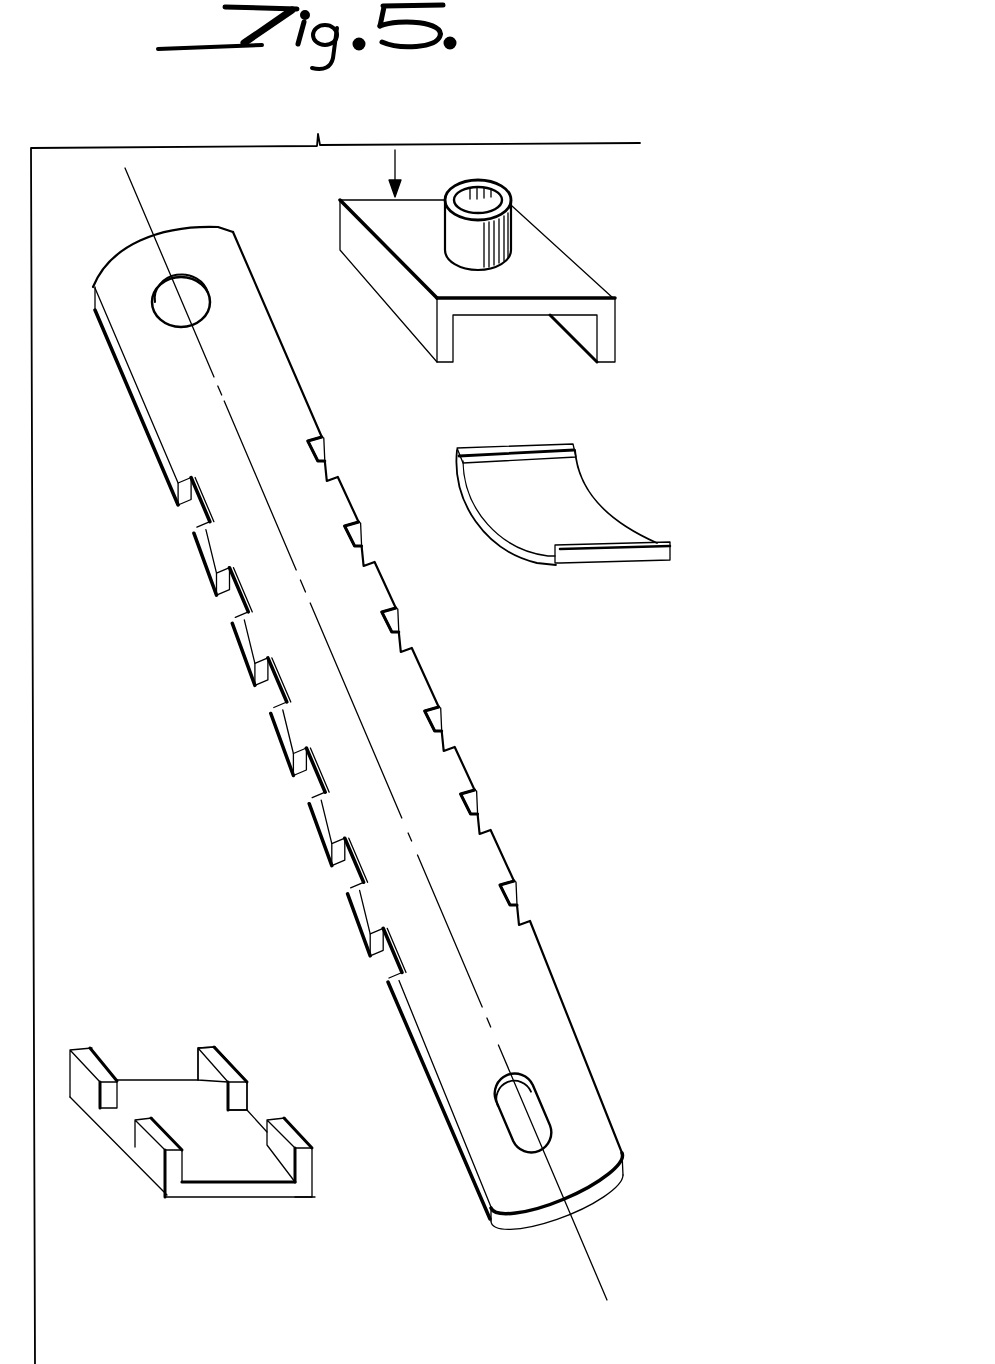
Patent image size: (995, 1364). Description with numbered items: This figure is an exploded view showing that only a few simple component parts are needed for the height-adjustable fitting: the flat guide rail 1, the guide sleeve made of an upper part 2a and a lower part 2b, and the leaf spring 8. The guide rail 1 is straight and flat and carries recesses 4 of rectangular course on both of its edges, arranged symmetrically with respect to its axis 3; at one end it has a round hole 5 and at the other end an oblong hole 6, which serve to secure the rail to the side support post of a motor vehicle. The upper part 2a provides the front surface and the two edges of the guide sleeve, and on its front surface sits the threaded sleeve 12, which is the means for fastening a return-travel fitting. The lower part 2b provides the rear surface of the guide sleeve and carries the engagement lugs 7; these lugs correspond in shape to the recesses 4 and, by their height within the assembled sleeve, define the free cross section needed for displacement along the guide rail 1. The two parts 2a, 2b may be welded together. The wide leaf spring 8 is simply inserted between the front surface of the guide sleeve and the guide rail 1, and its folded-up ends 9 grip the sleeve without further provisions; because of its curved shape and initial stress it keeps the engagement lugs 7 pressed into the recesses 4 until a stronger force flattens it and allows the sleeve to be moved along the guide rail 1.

The guide rail 1 is at (172, 443).
The axis 3 is at (138, 203).
The recesses 4 is at (242, 603).
The round hole 5 is at (163, 315).
The oblong hole 6 is at (543, 1127).
The threaded sleeve 12 is at (503, 190).
The upper part 2a is at (582, 283).
The leaf spring 8 is at (602, 518).
The folded-up ends 9 is at (552, 443).
The lower part 2b is at (213, 1190).
The engagement lugs 7 is at (235, 1063).